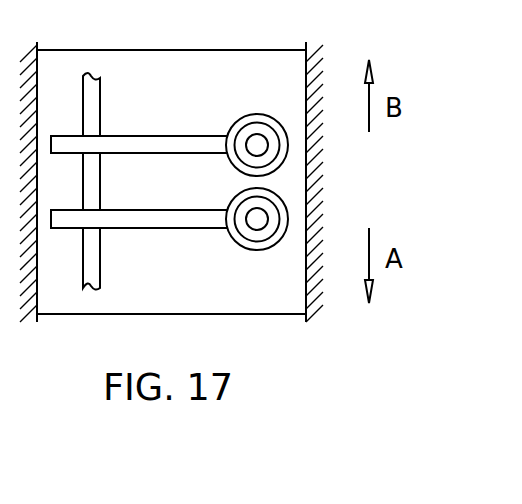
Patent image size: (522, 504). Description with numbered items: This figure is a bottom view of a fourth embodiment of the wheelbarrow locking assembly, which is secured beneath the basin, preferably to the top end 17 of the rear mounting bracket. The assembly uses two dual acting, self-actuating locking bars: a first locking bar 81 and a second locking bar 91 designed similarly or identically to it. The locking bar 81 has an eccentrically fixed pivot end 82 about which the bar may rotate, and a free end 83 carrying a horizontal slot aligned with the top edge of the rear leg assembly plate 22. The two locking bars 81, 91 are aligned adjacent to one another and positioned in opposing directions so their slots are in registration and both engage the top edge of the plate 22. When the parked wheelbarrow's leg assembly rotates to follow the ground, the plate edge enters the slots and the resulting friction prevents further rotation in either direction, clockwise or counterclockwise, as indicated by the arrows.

The top end of the rear mounting bracket 17 is at (260, 297).
The rear leg assembly plate 22 is at (98, 92).
The locking bar 81 is at (186, 136).
The eccentrically fixed pivot end 82 is at (257, 140).
The free end 83 is at (67, 136).
The second locking bar 91 is at (163, 228).